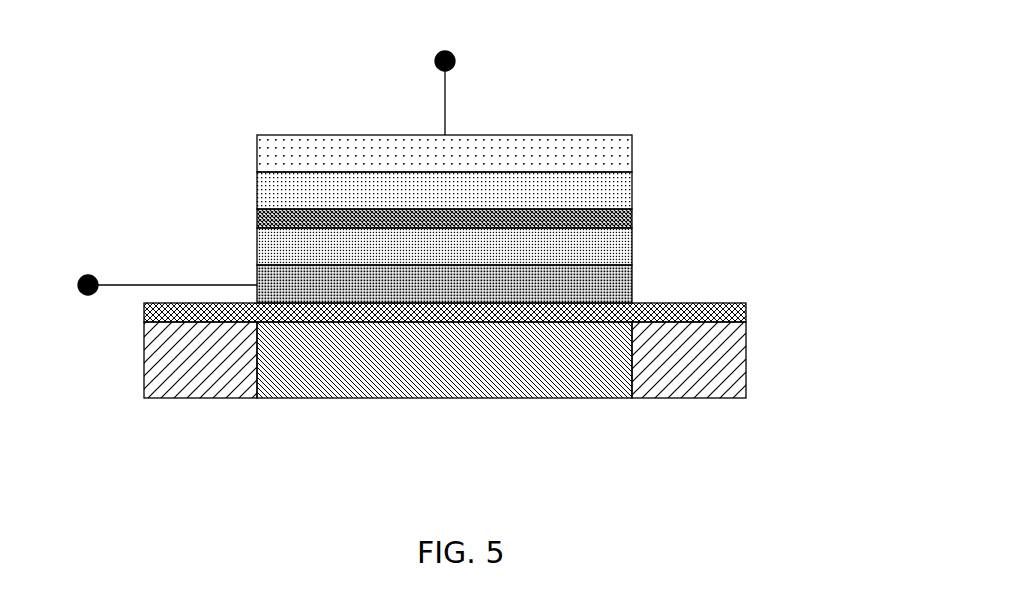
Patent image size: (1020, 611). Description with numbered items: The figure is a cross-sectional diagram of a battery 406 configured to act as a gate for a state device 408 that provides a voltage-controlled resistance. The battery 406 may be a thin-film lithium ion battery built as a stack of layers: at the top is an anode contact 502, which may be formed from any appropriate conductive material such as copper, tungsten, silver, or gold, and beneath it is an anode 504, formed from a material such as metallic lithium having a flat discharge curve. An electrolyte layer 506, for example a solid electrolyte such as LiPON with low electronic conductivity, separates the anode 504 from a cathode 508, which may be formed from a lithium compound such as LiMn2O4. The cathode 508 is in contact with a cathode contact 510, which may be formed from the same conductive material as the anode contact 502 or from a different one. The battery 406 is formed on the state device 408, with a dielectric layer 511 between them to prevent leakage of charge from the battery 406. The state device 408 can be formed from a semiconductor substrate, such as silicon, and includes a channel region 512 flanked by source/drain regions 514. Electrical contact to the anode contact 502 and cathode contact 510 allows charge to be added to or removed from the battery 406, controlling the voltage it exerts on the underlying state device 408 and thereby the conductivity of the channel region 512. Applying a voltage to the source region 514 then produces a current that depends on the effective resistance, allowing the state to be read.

The battery 406 is at (782, 135).
The state device 408 is at (782, 322).
The anode contact 502 is at (632, 152).
The anode 504 is at (257, 199).
The electrolyte layer 506 is at (632, 218).
The cathode 508 is at (257, 255).
The cathode contact 510 is at (632, 283).
The dielectric layer 511 is at (144, 313).
The channel region 512 is at (447, 398).
The source/drain regions 514 is at (202, 398).